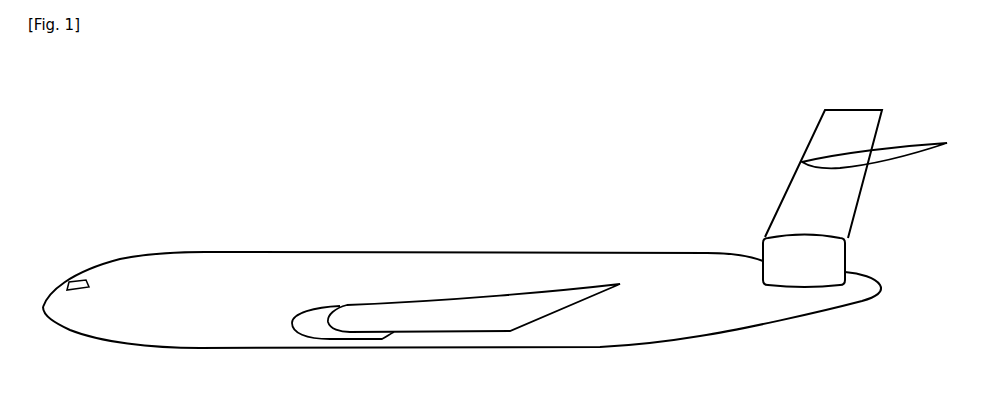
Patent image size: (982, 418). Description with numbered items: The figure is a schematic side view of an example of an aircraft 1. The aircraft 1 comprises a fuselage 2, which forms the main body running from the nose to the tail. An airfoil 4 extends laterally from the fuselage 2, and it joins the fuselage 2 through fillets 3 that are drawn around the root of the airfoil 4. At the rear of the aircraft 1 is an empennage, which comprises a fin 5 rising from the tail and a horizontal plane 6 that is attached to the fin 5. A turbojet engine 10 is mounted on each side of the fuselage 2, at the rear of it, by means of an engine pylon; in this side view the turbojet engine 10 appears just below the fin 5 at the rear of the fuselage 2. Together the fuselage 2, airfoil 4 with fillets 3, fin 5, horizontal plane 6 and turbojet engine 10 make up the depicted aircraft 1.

The aircraft 1 is at (232, 142).
The fuselage 2 is at (207, 305).
The fillets 3 is at (313, 330).
The airfoil 4 is at (465, 322).
The fin 5 is at (794, 201).
The horizontal plane 6 is at (897, 153).
The turbojet engine 10 is at (802, 280).